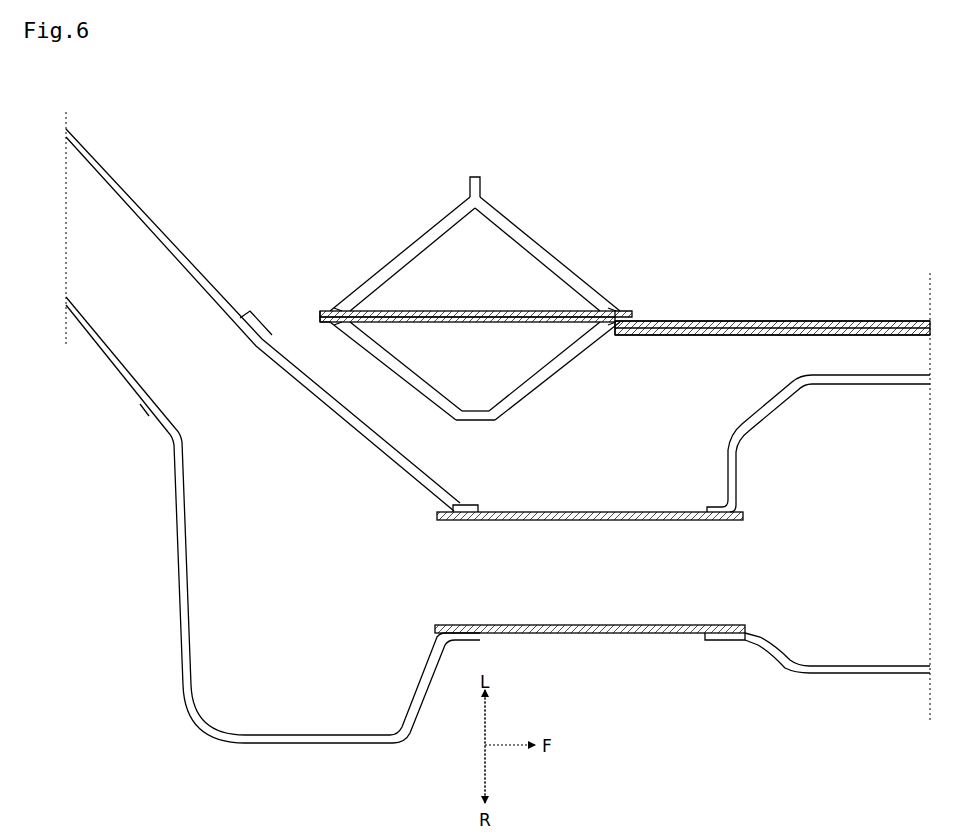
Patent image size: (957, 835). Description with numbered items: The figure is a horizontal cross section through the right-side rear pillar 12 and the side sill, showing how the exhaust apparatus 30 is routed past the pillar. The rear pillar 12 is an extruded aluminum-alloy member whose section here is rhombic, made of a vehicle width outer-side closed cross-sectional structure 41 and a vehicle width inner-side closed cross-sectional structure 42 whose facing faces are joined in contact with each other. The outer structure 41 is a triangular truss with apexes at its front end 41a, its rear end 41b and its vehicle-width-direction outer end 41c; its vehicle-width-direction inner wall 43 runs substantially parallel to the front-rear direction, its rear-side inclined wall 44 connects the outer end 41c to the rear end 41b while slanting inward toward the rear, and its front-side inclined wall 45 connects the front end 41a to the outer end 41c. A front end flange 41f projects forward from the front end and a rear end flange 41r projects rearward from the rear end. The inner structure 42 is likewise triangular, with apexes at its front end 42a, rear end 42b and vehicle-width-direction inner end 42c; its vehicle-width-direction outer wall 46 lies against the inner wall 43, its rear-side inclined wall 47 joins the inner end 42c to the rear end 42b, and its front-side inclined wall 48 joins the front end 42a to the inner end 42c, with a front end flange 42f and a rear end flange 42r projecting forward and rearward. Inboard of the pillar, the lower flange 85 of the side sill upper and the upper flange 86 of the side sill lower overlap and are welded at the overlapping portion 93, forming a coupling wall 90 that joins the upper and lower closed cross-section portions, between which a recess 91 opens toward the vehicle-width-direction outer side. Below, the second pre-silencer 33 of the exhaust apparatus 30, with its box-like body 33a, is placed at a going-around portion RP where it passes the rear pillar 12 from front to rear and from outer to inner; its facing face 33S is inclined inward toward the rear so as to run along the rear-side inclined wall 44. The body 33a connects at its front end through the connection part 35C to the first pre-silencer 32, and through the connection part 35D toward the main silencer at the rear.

The rear pillar 12 is at (494, 298).
The vehicle width inner-side closed cross-sectional structure 42 is at (472, 232).
The vehicle-width-direction inner end 42c is at (480, 197).
The rear-side inclined wall 47 is at (437, 228).
The front-side inclined wall 48 is at (541, 246).
The front end 42a is at (620, 306).
The rear end 42b is at (336, 309).
The rear end flange 42r is at (335, 308).
The front end flange 42f is at (625, 311).
The vehicle-width-direction outer wall 46 is at (425, 311).
The vehicle-width-direction inner wall 43 is at (435, 322).
The vehicle width outer-side closed cross-sectional structure 41 is at (494, 386).
The rear-side inclined wall 44 is at (405, 376).
The front-side inclined wall 45 is at (556, 373).
The vehicle-width-direction outer end 41c is at (480, 420).
The rear end 41b is at (338, 324).
The rear end flange 41r is at (320, 318).
The front end 41a is at (613, 332).
The front end flange 41f is at (633, 333).
The coupling wall 90 is at (772, 298).
The upper flange 86 is at (815, 322).
The lower flange 85 is at (796, 336).
The overlapping portion 93 is at (897, 322).
The recess 91 is at (770, 368).
The facing face 33S is at (445, 488).
The connection part 35D is at (118, 368).
The going-around portion RP is at (173, 522).
The second pre-silencer 33 is at (331, 714).
The body 33a is at (352, 745).
The connection part 35C is at (578, 634).
The exhaust apparatus 30 is at (830, 694).
The first pre-silencer 32 is at (845, 673).